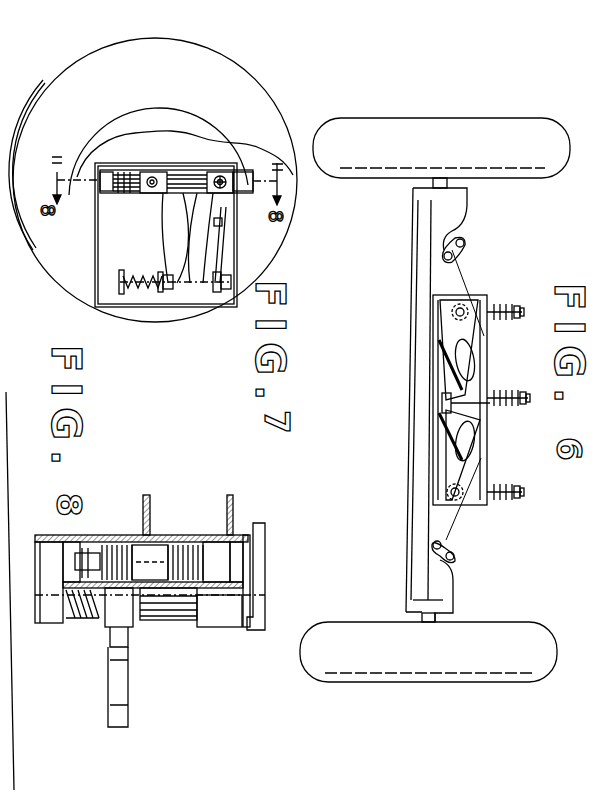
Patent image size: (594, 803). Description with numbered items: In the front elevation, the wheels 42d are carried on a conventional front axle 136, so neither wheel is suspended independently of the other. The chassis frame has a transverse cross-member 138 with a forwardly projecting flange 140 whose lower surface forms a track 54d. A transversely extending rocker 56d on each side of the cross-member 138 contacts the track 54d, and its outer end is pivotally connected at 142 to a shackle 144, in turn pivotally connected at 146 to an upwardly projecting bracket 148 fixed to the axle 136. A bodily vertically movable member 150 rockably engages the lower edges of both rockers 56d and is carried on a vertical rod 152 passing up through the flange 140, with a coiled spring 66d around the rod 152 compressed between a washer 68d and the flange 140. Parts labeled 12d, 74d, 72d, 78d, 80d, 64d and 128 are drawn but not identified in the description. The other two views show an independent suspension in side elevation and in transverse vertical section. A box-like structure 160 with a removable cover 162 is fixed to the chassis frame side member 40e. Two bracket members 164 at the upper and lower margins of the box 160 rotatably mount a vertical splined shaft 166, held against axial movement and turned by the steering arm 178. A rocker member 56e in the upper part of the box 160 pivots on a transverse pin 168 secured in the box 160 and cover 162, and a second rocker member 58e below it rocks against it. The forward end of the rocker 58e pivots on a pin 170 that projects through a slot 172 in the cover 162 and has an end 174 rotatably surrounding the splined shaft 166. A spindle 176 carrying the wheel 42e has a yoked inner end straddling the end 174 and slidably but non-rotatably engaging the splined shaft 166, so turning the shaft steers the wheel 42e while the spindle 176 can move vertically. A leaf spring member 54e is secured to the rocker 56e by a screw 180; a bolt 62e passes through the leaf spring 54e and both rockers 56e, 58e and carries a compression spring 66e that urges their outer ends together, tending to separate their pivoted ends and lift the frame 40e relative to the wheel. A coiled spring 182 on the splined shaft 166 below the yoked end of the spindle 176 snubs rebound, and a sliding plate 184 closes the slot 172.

In FIG. 6, the wheel hub 12d is at (445, 180).
In FIG. 6, the wheel 42d is at (352, 168).
In FIG. 6, the upwardly projecting bracket 148 is at (413, 226).
In FIG. 6, the pivotal connection 146 is at (482, 228).
In FIG. 6, the shackle 144 is at (468, 262).
In FIG. 6, the pivotal connection 142 is at (440, 258).
In FIG. 6, the transversely extending rocker 56d is at (400, 320).
In FIG. 6, the spring assembly 78d is at (508, 302).
In FIG. 6, the cross plate 74d is at (425, 355).
In FIG. 6, the plate 72d is at (487, 322).
In FIG. 6, the slot 80d is at (465, 343).
In FIG. 6, the washer 68d is at (527, 402).
In FIG. 6, the front axle 136 is at (411, 412).
In FIG. 6, the vertically extending rod 152 is at (442, 403).
In FIG. 6, the bodily vertically movable member 150 is at (433, 442).
In FIG. 6, the slot 64d is at (464, 441).
In FIG. 6, the forwardly projecting flange 140 is at (488, 415).
In FIG. 6, the coiled spring 66d is at (522, 408).
In FIG. 6, the transverse cross-member 138 is at (465, 505).
In FIG. 6, the track 54d is at (488, 505).
In FIG. 7, the wheel 42e is at (34, 100).
In FIG. 7, the leaf spring member 54e is at (236, 272).
In FIG. 7, the removable cover 162 is at (100, 268).
In FIG. 8, the removable cover 162 is at (246, 615).
In FIG. 7, the spindle 176 is at (153, 194).
In FIG. 8, the spindle 176 is at (110, 670).
In FIG. 7, the box-like structure 160 is at (148, 300).
In FIG. 8, the box-like structure 160 is at (118, 548).
In FIG. 7, the transverse pin 168 is at (223, 176).
In FIG. 8, the transverse pin 168 is at (217, 538).
In FIG. 7, the bracket members 164 is at (115, 172).
In FIG. 8, the bracket members 164 is at (56, 610).
In FIG. 7, the steering arm 178 is at (250, 176).
In FIG. 7, the second rocker member 58e is at (175, 238).
In FIG. 7, the rocker member 56e is at (200, 238).
In FIG. 7, the screw 180 is at (252, 240).
In FIG. 7, the coiled spring 182 is at (123, 270).
In FIG. 8, the coiled spring 182 is at (82, 618).
In FIG. 7, the compression spring 66e is at (163, 295).
In FIG. 8, the compression spring 66e is at (92, 548).
In FIG. 7, the bolt 62e is at (222, 295).
In FIG. 8, the chassis frame side member 40e is at (227, 528).
In FIG. 8, the end 174 is at (128, 627).
In FIG. 8, the slot 172 is at (170, 620).
In FIG. 8, the sliding plate 184 is at (196, 622).
In FIG. 8, the splined shaft 166 is at (212, 620).
In FIG. 8, the pin 170 is at (145, 537).
In FIG. 8, the lever 128 is at (278, 578).